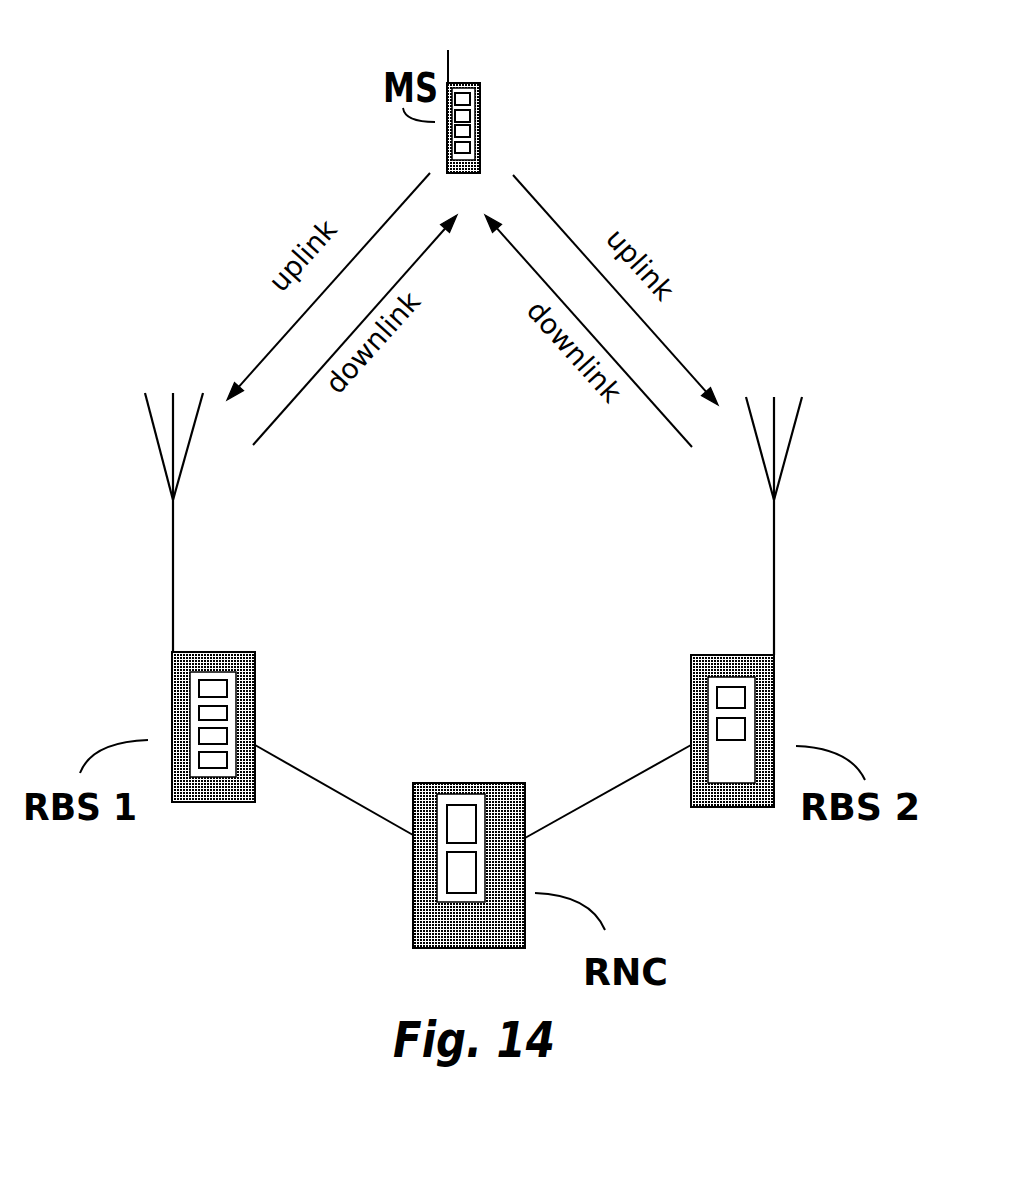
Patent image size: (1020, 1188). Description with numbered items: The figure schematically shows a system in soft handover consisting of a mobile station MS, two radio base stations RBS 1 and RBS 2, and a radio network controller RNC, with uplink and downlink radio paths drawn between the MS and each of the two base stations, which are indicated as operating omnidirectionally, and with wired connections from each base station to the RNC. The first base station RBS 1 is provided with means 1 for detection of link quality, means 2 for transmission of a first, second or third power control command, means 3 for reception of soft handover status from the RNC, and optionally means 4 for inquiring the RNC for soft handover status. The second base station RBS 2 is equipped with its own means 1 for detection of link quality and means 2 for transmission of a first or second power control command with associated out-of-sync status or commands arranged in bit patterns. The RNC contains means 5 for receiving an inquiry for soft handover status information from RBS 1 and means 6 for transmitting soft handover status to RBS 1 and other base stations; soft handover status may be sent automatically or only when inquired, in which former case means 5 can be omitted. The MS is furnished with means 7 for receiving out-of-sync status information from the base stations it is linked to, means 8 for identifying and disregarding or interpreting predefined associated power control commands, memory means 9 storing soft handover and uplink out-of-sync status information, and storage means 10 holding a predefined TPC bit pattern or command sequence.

The means for detection of link quality 1 is at (228, 690).
The means for transmission of power control command 2 is at (228, 712).
The means for reception of soft handover status 3 is at (213, 768).
The means for inquiring an RNC for soft handover status 4 is at (228, 736).
The means for receiving an inquiry for soft handover status information 5 is at (460, 800).
The means for transmission of soft handover status 6 is at (440, 868).
The means for receiving information on out-of-sync status 7 is at (470, 98).
The means for identifying and disregarding or interpreting power control commands 8 is at (470, 115).
The memory means 9 is at (470, 131).
The storage means 10 is at (470, 148).